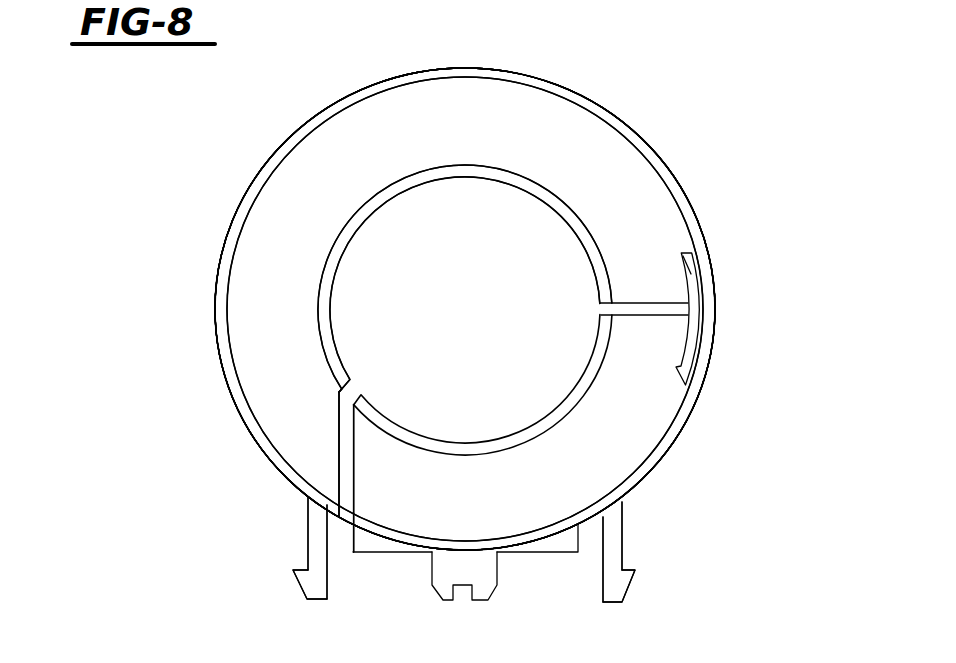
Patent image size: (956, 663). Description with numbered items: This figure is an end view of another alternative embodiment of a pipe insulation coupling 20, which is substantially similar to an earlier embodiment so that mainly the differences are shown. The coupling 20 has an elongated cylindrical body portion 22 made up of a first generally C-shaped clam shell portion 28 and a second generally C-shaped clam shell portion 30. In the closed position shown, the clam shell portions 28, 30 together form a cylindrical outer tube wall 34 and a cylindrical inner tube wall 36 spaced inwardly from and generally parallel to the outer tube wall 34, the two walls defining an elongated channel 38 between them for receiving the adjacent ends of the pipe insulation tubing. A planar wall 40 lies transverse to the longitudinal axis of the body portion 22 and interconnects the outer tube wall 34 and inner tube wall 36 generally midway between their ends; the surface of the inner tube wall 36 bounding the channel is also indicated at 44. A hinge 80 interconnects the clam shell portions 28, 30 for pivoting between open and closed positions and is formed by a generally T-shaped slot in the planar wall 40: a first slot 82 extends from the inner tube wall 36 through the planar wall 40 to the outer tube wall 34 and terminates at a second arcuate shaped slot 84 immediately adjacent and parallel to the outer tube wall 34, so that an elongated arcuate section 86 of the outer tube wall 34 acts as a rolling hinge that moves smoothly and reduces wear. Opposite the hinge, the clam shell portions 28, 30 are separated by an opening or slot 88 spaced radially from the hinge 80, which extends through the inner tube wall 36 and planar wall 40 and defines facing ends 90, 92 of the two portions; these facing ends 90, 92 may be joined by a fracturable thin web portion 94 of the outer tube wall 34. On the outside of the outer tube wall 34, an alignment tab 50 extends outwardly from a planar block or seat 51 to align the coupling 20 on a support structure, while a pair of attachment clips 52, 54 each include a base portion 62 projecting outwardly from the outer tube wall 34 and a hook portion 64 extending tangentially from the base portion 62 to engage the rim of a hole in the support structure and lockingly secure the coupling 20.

The pipe insulation coupling 20 is at (698, 99).
The elongated cylindrical body portion 22 is at (531, 72).
The first clam shell portion 28 is at (262, 168).
The second clam shell portion 30 is at (668, 453).
The outer tube wall 34 is at (216, 290).
The inner tube wall 36 is at (331, 263).
The elongated channel 38 is at (378, 146).
The planar wall 40 is at (291, 314).
The inner wall surface 44 is at (558, 208).
The alignment tab 50 is at (490, 600).
The planar block or seat 51 is at (562, 553).
The attachment clip 52 is at (318, 600).
The attachment clip 54 is at (612, 602).
The base portion 62 is at (308, 516).
The hook portion 64 is at (294, 571).
The hinge 80 is at (732, 231).
The first slot 82 is at (646, 316).
The second arcuate shaped slot 84 is at (681, 253).
The elongated arcuate section of the outer tube wall 86 is at (724, 310).
The opening or slot 88 is at (357, 390).
The facing end 90 is at (339, 432).
The facing end 92 is at (353, 465).
The fracturable thin web portion 94 is at (343, 513).